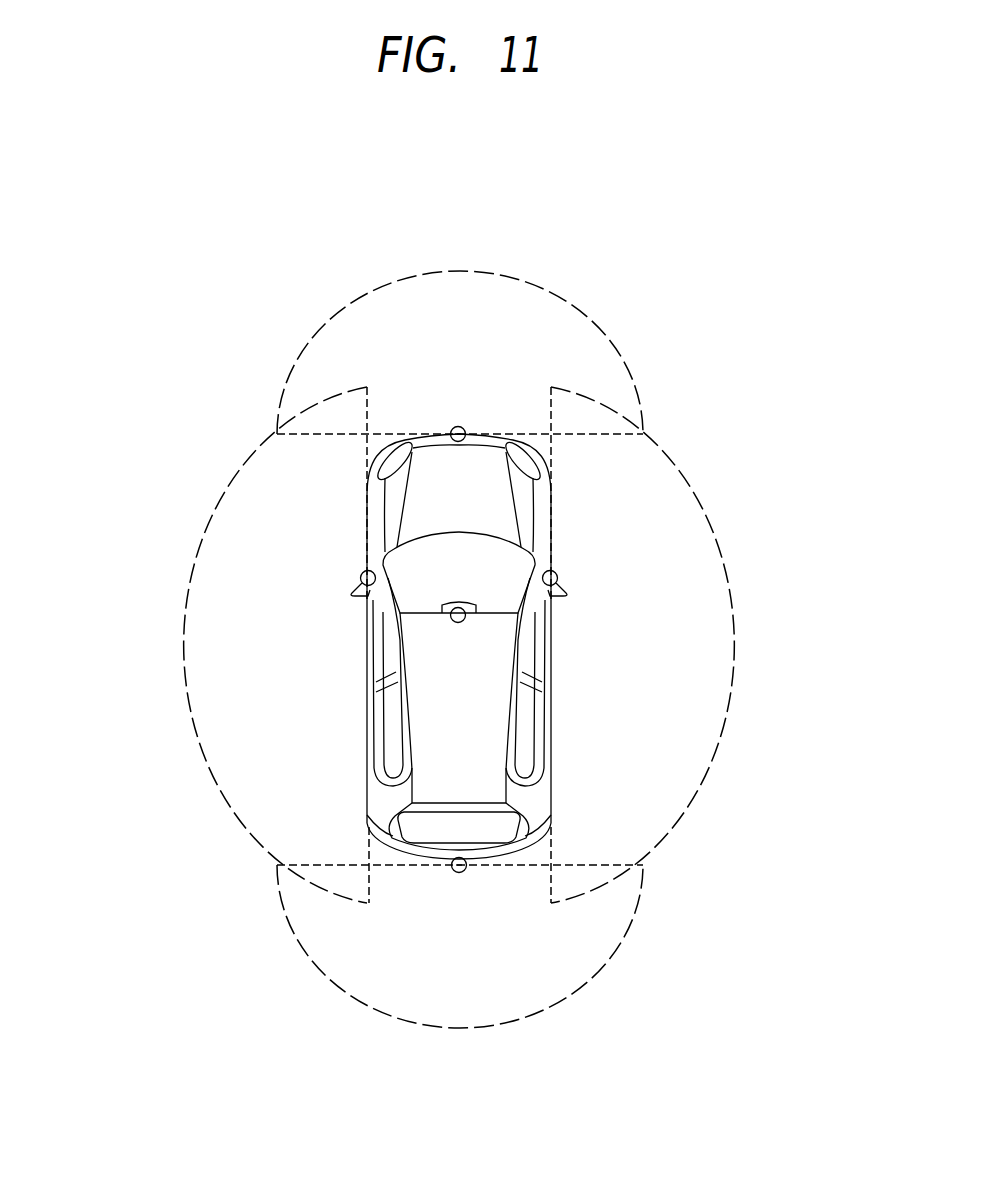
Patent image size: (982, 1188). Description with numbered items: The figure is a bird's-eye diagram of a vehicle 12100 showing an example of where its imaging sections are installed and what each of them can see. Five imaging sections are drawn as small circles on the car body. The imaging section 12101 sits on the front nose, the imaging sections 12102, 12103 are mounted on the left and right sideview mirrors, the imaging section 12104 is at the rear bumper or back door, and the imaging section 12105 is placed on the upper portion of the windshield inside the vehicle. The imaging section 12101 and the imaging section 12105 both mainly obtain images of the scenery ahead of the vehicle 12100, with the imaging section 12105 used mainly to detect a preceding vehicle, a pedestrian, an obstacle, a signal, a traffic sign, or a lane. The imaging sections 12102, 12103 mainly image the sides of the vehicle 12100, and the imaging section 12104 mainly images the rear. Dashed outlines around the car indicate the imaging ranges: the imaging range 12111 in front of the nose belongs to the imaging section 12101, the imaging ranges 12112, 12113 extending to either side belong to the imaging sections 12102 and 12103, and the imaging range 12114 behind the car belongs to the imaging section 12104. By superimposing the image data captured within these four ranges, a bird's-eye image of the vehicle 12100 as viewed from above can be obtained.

The vehicle 12100 is at (372, 517).
The imaging section 12101 is at (458, 426).
The imaging section 12102 is at (360, 578).
The imaging section 12103 is at (558, 577).
The imaging section 12104 is at (458, 873).
The imaging section 12105 is at (463, 621).
The imaging range 12111 is at (461, 268).
The imaging range 12112 is at (183, 630).
The imaging range 12113 is at (734, 625).
The imaging range 12114 is at (460, 1030).